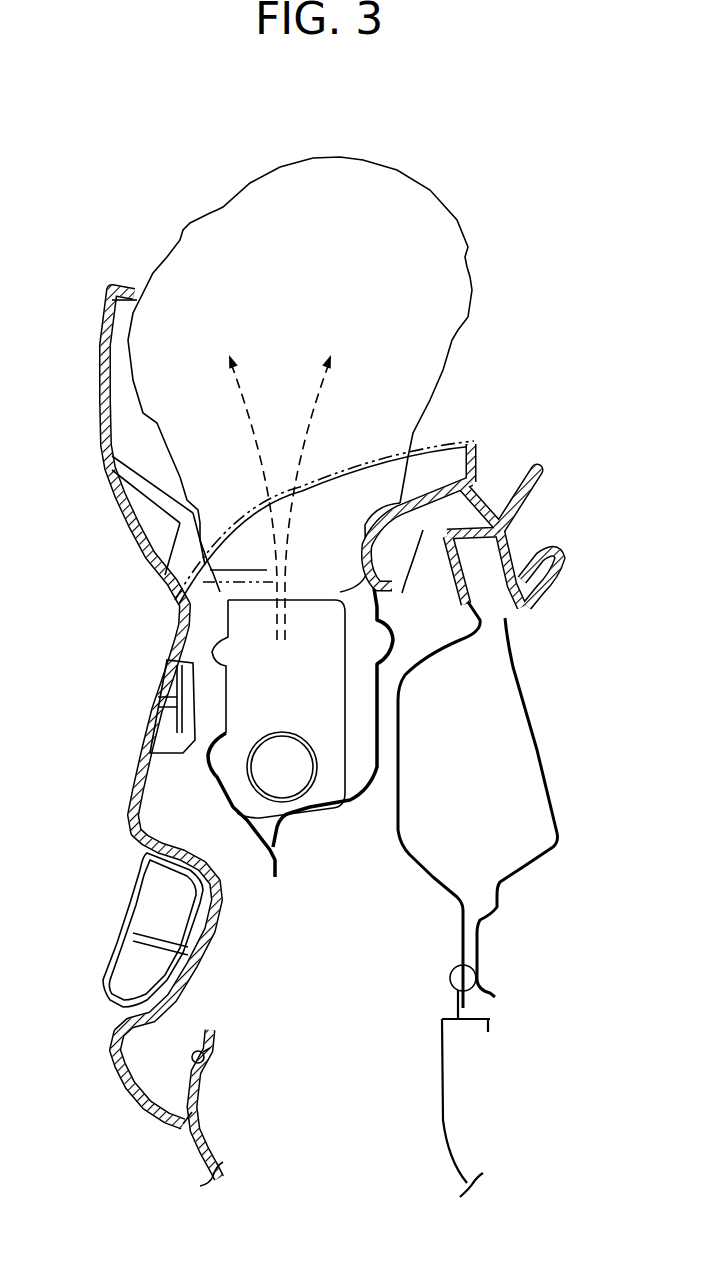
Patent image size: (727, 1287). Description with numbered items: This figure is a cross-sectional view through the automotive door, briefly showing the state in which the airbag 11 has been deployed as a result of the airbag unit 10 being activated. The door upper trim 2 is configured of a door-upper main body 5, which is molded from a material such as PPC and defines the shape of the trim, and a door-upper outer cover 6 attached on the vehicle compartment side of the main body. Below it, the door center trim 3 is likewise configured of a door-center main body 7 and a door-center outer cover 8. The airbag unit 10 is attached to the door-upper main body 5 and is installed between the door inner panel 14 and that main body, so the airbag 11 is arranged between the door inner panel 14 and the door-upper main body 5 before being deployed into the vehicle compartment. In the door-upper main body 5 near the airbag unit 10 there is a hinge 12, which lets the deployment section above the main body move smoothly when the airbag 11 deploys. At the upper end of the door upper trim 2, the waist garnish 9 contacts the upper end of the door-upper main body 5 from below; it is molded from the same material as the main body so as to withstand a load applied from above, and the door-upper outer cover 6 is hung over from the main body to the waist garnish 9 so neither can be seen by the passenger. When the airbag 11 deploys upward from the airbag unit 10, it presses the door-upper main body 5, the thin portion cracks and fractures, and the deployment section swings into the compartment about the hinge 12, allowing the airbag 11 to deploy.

The door upper trim 2 is at (90, 645).
The door center trim 3 is at (118, 1150).
The door-upper main body 5 is at (158, 790).
The door-upper outer cover 6 is at (130, 710).
The door-center main body 7 is at (232, 1047).
The door-center outer cover 8 is at (172, 1148).
The waist garnish 9 is at (392, 570).
The airbag unit 10 is at (313, 798).
The airbag 11 is at (410, 297).
The hinge 12 is at (214, 618).
The door inner panel 14 is at (538, 752).